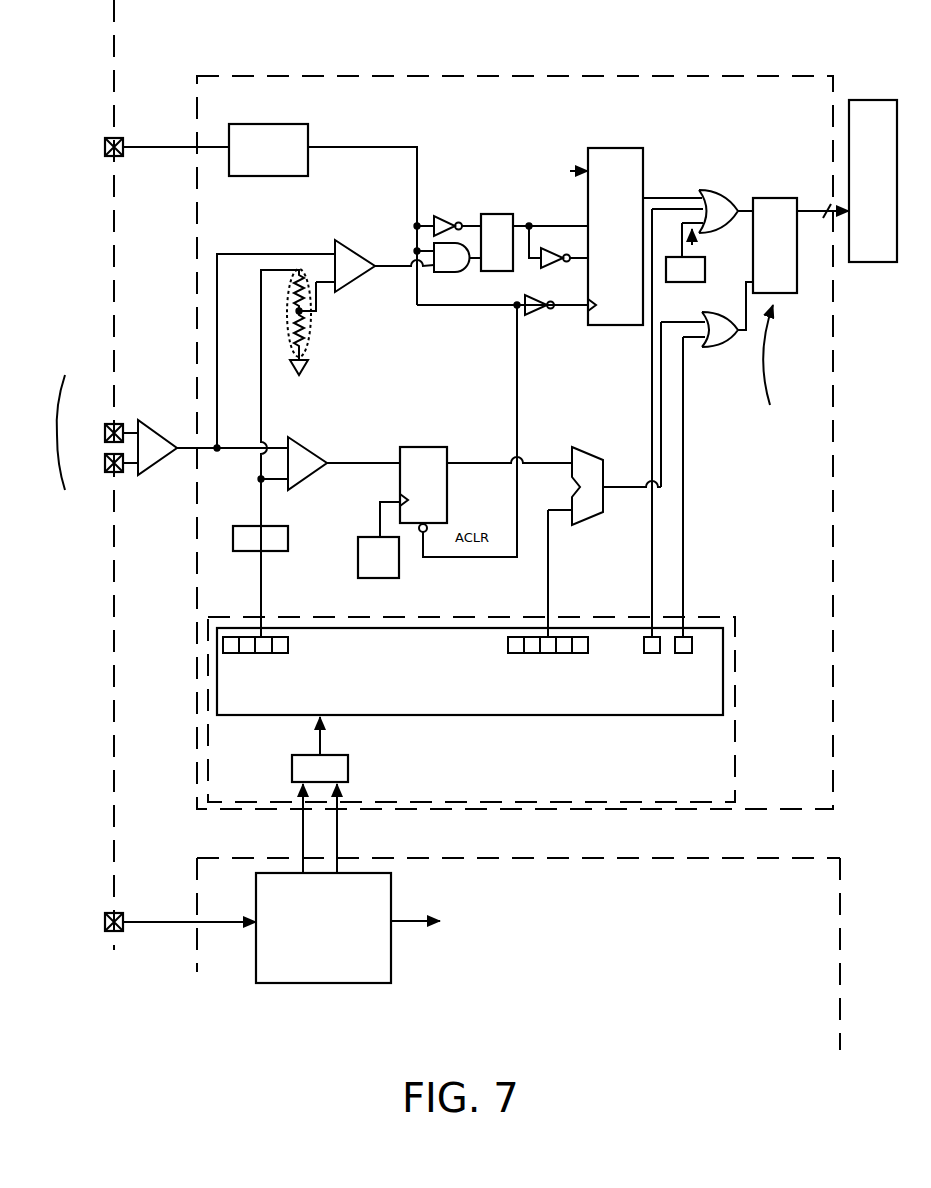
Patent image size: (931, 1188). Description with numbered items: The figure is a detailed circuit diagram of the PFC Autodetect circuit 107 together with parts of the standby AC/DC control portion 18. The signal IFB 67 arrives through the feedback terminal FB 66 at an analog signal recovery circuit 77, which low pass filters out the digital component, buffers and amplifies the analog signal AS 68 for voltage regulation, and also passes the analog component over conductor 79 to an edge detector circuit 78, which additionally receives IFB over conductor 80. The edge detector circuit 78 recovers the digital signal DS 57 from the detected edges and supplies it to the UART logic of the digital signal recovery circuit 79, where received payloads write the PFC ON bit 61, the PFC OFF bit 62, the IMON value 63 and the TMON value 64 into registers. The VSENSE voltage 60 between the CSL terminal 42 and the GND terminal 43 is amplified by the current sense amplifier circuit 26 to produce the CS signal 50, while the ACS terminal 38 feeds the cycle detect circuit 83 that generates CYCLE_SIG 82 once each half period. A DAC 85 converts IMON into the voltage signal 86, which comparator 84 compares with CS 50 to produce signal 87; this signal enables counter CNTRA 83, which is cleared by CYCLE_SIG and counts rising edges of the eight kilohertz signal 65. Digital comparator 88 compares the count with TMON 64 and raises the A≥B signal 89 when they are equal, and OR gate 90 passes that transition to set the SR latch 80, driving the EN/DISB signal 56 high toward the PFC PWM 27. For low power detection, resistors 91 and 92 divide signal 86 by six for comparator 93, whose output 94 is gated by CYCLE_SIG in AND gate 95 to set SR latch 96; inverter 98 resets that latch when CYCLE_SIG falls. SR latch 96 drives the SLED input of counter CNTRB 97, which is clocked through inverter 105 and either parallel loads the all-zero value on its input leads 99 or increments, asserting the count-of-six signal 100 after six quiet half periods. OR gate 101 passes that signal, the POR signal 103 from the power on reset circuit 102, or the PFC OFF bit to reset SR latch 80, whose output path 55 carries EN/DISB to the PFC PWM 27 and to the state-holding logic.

The standby AC/DC control circuit portion 18 is at (477, 525).
The PFC Autodetect circuit 107 is at (528, 76).
The ACS terminal 38 is at (100, 147).
The cycle detect circuit / counter CNTRA 83 is at (267, 124).
The CYCLE_SIG signal 82 is at (492, 328).
The inverter 98 is at (442, 214).
The SR latch 96 is at (496, 214).
The AND gate 95 is at (449, 257).
The comparator 93 is at (296, 344).
The comparator output signal 94 is at (398, 280).
The resistor 91 is at (291, 294).
The resistor 92 is at (291, 338).
The counter CNTRB 97 is at (613, 146).
The parallel input leads 99 is at (572, 169).
The inverter 105 is at (536, 317).
The CNTRB=6 signal 100 is at (658, 187).
The OR gate 101 is at (702, 211).
The power on reset circuit 102 is at (685, 285).
The power on reset POR signal 103 is at (696, 244).
The SR latch / conductor 80 is at (302, 834).
The EN/DISB signal 56 is at (821, 198).
The output 55 is at (840, 202).
The PFC Pulse Width Modulator 27 is at (873, 181).
The OR gate 90 is at (733, 423).
The current sense amplifier circuit 26 is at (145, 418).
The CS signal 50 is at (190, 433).
The VSENSE voltage signal 60 is at (78, 407).
The GND terminal 43 is at (102, 438).
The CSL terminal 42 is at (100, 466).
The comparator 84 is at (292, 463).
The comparator output signal 87 is at (328, 438).
The digital comparator 88 is at (592, 446).
The A≥B signal 89 is at (640, 478).
The 8 kHz signal 65 is at (370, 532).
The DAC 85 is at (282, 528).
The VIMON signal 86 is at (250, 495).
The IMON value 63 is at (268, 600).
The TMON value 64 is at (544, 548).
The PFC OFF bit 62 is at (643, 546).
The PFC ON bit 61 is at (694, 548).
The digital signal recovery circuit / conductor 79 is at (342, 835).
The digital signal DS 57 is at (332, 727).
The edge detector circuit 78 is at (320, 768).
The analog signal recovery circuit 77 is at (323, 928).
The FB pin 66 is at (101, 925).
The IFB signal 67 is at (137, 932).
The analog signal AS 68 is at (424, 910).